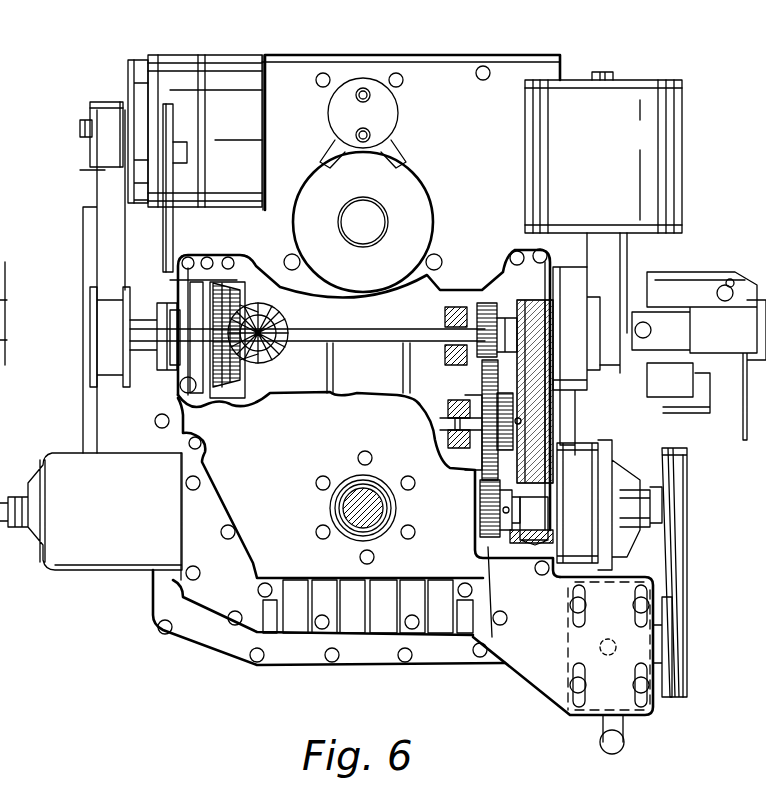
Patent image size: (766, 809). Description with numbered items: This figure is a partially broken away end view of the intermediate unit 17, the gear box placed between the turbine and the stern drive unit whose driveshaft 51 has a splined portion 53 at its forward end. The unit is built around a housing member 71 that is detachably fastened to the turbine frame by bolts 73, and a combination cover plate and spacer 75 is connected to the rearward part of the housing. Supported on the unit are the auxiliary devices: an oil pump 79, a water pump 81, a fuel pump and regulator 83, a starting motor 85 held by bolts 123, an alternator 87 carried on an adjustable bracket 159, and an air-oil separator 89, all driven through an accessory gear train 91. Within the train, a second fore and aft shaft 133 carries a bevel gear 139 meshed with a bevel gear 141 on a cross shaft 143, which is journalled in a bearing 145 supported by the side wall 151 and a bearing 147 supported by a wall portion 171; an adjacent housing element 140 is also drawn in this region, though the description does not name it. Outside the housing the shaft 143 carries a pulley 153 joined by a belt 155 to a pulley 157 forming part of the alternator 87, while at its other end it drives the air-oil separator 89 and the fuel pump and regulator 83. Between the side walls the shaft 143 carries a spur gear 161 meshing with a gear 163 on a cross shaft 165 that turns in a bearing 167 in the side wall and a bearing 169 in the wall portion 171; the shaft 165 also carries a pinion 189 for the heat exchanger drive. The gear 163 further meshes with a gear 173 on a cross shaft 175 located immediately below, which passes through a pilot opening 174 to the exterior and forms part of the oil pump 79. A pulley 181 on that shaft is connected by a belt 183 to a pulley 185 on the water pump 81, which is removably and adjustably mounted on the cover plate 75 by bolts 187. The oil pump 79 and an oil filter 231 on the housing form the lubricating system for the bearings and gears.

The intermediate unit 17 is at (200, 666).
The driveshaft 51 is at (343, 508).
The splined portion 53 is at (350, 528).
The housing member 71 is at (480, 112).
The bolts 73 is at (160, 638).
The combination cover plate and spacer 75 is at (257, 553).
The oil pump 79 is at (585, 477).
The water pump 81 is at (583, 712).
The fuel pump and regulator 83 is at (665, 325).
The starting motor 85 is at (330, 188).
The alternator 87 is at (232, 70).
The air-oil separator 89 is at (600, 290).
The accessory gear train 91 is at (363, 345).
The bolts 123 is at (438, 260).
The second fore and aft shaft 133 is at (278, 347).
The bevel gear 139 is at (262, 312).
The bearing housing 140 is at (545, 393).
The bevel gear 141 is at (232, 385).
The cross shaft 143 is at (348, 347).
The bearing 145 is at (478, 305).
The bearing 147 is at (168, 300).
The side wall 151 is at (172, 375).
The pulley 153 is at (90, 385).
The belt 155 is at (105, 175).
The pulley 157 is at (88, 107).
The adjustable bracket 159 is at (172, 232).
The spur gear 161 is at (505, 262).
The gear 163 is at (480, 380).
The cross shaft 165 is at (480, 430).
The bearing 167 is at (549, 437).
The bearing 169 is at (448, 440).
The wall portion 171 is at (458, 388).
The gear 173 is at (478, 521).
The pilot opening 174 is at (515, 550).
The cross shaft 175 is at (522, 513).
The pulley 181 is at (690, 483).
The belt 183 is at (686, 578).
The pulley 185 is at (690, 673).
The bolts 187 is at (574, 680).
The pinion 189 is at (482, 465).
The oil filter 231 is at (72, 552).